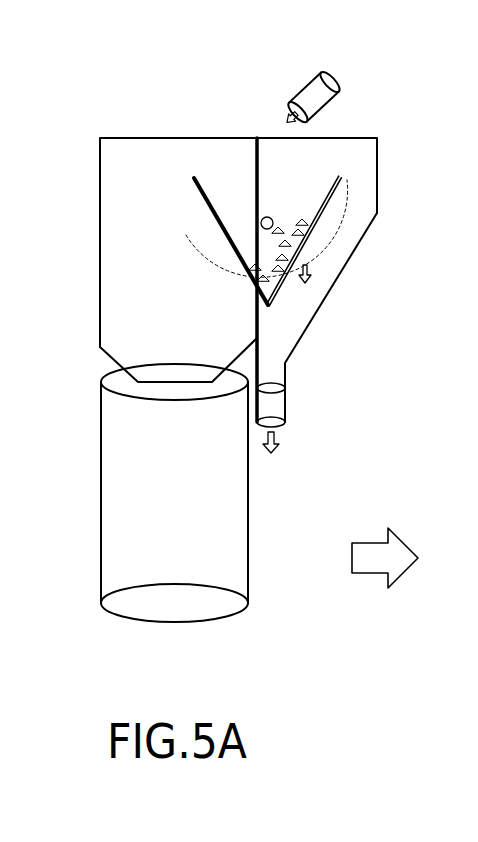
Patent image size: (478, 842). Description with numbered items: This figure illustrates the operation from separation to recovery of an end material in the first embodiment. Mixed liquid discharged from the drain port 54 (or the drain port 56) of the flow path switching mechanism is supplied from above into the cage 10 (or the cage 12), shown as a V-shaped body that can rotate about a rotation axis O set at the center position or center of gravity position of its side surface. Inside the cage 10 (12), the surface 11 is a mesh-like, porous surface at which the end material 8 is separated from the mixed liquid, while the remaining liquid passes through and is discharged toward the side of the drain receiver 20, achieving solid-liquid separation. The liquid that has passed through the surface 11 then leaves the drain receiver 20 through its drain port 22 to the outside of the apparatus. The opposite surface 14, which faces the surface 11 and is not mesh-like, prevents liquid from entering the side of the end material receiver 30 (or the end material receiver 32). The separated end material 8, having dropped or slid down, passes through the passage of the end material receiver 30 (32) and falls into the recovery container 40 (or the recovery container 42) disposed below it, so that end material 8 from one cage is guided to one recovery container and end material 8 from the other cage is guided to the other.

The end material 8 is at (302, 238).
The cage 10 is at (234, 225).
The cage 12 is at (234, 225).
The surface 11 is at (345, 178).
The surface 14 is at (206, 199).
The rotation axis O is at (261, 226).
The drain receiver 20 is at (377, 214).
The drain port 22 is at (285, 402).
The end material receiver 30 is at (203, 260).
The end material receiver 32 is at (100, 312).
The recovery container 40 is at (138, 493).
The recovery container 42 is at (100, 480).
The drain port 54 is at (356, 85).
The drain port 56 is at (333, 85).